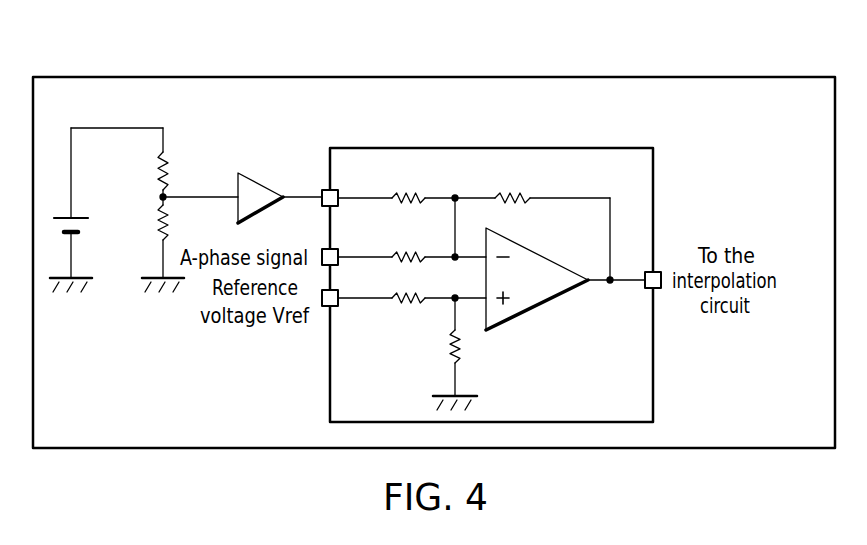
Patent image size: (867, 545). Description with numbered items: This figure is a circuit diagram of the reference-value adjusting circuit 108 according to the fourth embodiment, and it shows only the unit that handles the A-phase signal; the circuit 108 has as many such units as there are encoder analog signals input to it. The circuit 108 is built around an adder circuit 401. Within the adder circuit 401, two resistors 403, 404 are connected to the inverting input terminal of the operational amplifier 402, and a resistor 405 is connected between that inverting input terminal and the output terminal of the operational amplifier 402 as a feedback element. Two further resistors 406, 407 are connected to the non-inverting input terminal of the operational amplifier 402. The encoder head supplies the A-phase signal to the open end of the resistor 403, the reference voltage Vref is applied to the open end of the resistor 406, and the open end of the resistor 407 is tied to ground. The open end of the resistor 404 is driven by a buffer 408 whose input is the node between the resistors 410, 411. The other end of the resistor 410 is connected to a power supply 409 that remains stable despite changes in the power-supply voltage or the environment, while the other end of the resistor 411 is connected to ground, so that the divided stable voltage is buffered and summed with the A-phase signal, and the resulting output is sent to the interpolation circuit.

The reference-value adjusting circuit 108 is at (661, 91).
The adder circuit 401 is at (456, 157).
The operational amplifier 402 is at (546, 306).
The resistor 403 is at (412, 246).
The resistor 404 is at (409, 181).
The resistor 405 is at (527, 190).
The resistor 406 is at (405, 308).
The resistor 407 is at (465, 352).
The buffer 408 is at (263, 188).
The power supply 409 is at (82, 212).
The resistor 410 is at (173, 164).
The resistor 411 is at (154, 224).